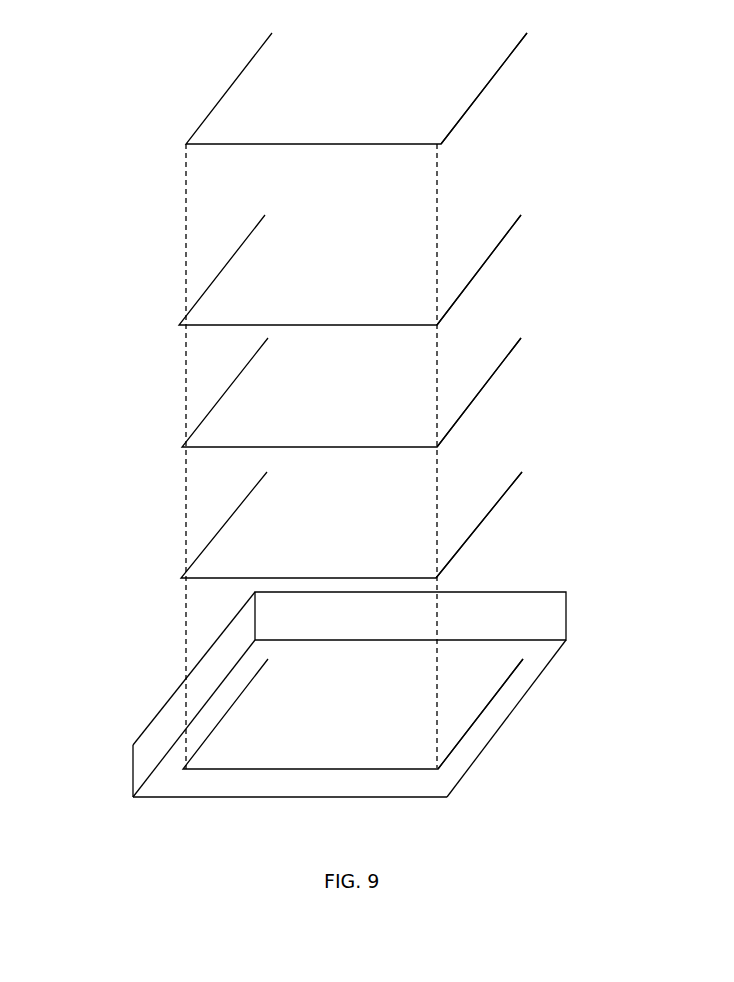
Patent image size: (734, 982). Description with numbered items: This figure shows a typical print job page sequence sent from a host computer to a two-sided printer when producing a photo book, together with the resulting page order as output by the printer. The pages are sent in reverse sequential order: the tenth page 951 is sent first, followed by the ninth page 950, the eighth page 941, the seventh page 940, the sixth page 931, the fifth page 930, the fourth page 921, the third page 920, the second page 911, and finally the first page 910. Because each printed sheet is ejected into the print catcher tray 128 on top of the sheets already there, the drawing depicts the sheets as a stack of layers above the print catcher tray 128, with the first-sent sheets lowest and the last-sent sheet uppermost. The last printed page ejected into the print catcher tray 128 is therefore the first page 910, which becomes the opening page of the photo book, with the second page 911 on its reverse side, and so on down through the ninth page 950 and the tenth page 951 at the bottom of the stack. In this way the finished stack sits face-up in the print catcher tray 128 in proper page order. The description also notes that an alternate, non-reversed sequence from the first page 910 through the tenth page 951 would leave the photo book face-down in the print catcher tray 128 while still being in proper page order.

The Page 1 910 is at (233, 119).
The Page 2 911 is at (491, 90).
The Page 3 920 is at (235, 295).
The Page 4 921 is at (487, 258).
The Page 5 930 is at (229, 426).
The Page 6 931 is at (502, 368).
The Page 7 940 is at (219, 563).
The Page 8 941 is at (509, 490).
The Page 9 950 is at (215, 754).
The Page 10 951 is at (478, 718).
The print catcher tray 128 is at (568, 612).